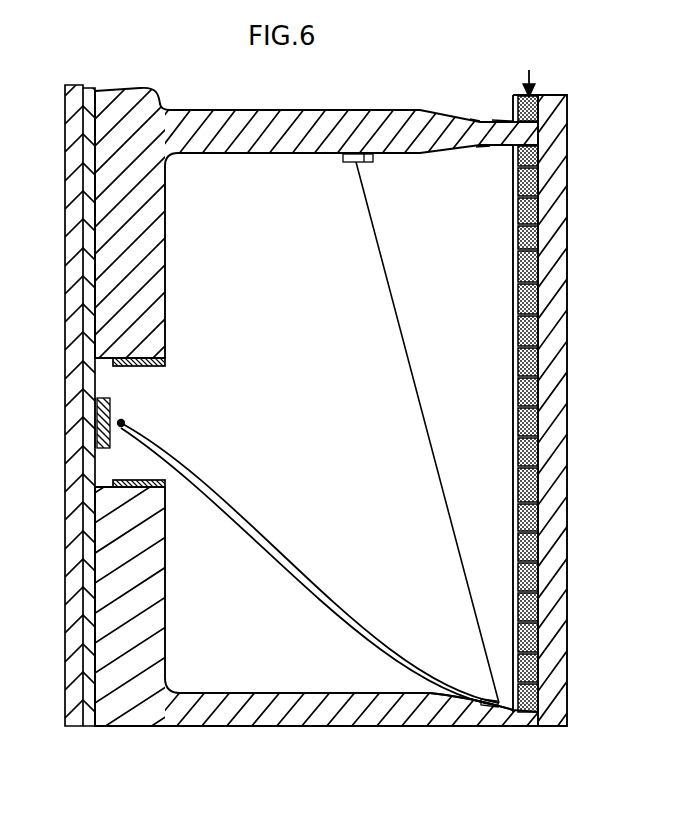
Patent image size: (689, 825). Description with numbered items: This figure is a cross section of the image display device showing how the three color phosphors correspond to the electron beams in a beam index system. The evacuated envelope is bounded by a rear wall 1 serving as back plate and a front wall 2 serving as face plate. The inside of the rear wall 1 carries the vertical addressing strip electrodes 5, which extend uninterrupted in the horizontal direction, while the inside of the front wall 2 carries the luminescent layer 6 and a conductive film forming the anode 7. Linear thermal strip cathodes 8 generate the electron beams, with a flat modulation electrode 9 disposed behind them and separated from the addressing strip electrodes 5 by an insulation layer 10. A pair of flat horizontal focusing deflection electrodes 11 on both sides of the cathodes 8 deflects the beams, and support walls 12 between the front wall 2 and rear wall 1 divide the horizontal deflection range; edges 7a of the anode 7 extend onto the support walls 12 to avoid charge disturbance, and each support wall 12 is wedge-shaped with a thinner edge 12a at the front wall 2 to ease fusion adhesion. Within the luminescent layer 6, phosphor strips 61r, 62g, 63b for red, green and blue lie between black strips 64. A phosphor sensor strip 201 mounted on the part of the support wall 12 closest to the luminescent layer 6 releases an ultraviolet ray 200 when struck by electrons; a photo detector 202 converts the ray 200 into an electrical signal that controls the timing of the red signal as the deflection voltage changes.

The rear wall 1 is at (70, 689).
The front wall 2 is at (563, 473).
The vertical addressing strip electrodes 5 is at (88, 265).
The luminescent layer 6 is at (533, 72).
The anode 7 is at (521, 473).
The edges of the anode 7a is at (503, 153).
The linear thermal strip cathodes 8 is at (125, 422).
The flat modulation electrode 9 is at (104, 404).
The insulation layer 10 is at (97, 418).
The flat horizontal focusing deflection electrodes 11 is at (160, 361).
The support walls 12 is at (200, 713).
The thinner edge 12a is at (503, 724).
The red phosphor strip 61r is at (537, 663).
The green phosphor strip 62g is at (532, 606).
The blue phosphor strip 63b is at (533, 543).
The black strips 64 is at (535, 574).
The ultraviolet ray 200 is at (427, 424).
The phosphor sensor strip 201 is at (491, 715).
The photo detector 202 is at (356, 155).